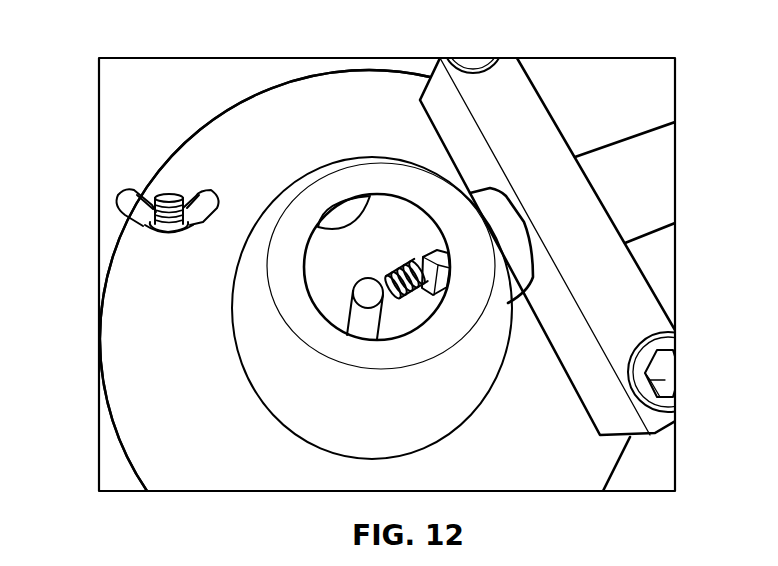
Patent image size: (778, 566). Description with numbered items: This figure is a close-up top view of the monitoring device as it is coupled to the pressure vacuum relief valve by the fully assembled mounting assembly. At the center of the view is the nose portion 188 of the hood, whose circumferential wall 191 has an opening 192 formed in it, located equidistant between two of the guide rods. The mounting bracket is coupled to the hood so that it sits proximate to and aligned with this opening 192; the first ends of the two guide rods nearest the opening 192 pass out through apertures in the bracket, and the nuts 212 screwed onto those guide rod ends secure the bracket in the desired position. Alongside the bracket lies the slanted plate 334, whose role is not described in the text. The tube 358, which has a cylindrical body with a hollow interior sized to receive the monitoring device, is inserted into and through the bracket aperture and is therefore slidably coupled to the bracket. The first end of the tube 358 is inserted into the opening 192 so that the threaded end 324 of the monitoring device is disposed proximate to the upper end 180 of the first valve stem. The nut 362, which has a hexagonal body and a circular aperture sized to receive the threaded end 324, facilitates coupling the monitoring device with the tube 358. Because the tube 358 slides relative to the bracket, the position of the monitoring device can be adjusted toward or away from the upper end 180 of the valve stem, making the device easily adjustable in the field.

The upper end of the first valve stem 180 is at (367, 292).
The threaded end of the monitoring device 324 is at (407, 275).
The nut 362 is at (440, 250).
The mounting plate 334 is at (538, 147).
The tube 358 is at (638, 165).
The opening 192 is at (483, 230).
The nuts 212 is at (672, 338).
The nose portion 188 is at (258, 306).
The circumferential wall 191 is at (227, 280).